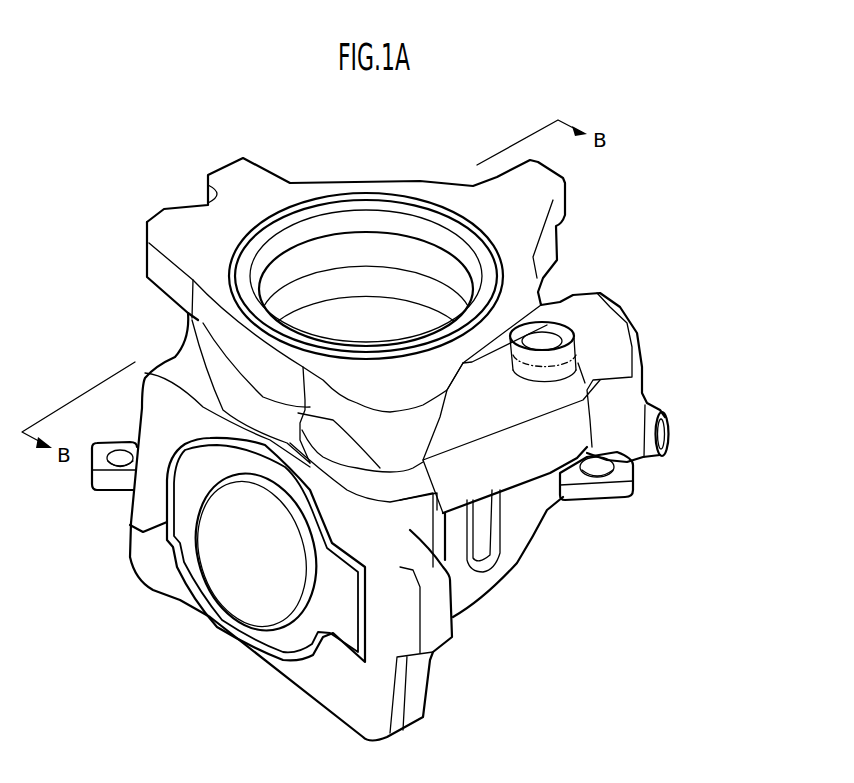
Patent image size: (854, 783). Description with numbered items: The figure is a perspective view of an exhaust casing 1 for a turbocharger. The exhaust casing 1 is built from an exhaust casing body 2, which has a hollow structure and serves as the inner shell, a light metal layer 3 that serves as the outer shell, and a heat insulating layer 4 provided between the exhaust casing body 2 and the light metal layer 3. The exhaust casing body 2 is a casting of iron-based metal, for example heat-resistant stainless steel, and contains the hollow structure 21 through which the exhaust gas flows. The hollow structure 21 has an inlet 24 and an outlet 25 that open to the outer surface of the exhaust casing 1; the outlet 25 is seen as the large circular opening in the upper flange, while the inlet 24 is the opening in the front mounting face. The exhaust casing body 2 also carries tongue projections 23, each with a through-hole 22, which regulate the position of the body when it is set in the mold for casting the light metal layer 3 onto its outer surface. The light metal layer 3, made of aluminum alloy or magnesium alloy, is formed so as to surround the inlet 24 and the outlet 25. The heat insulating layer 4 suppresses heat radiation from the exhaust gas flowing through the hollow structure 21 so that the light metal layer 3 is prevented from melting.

The exhaust casing 1 is at (652, 146).
The exhaust casing body 2 is at (270, 633).
The light metal layer 3 is at (552, 198).
The heat insulating layer 4 is at (288, 640).
The hollow structure 21 is at (366, 316).
The through-hole 22 is at (125, 451).
The tongue projection 23 is at (102, 492).
The inlet 24 is at (243, 600).
The outlet 25 is at (307, 220).